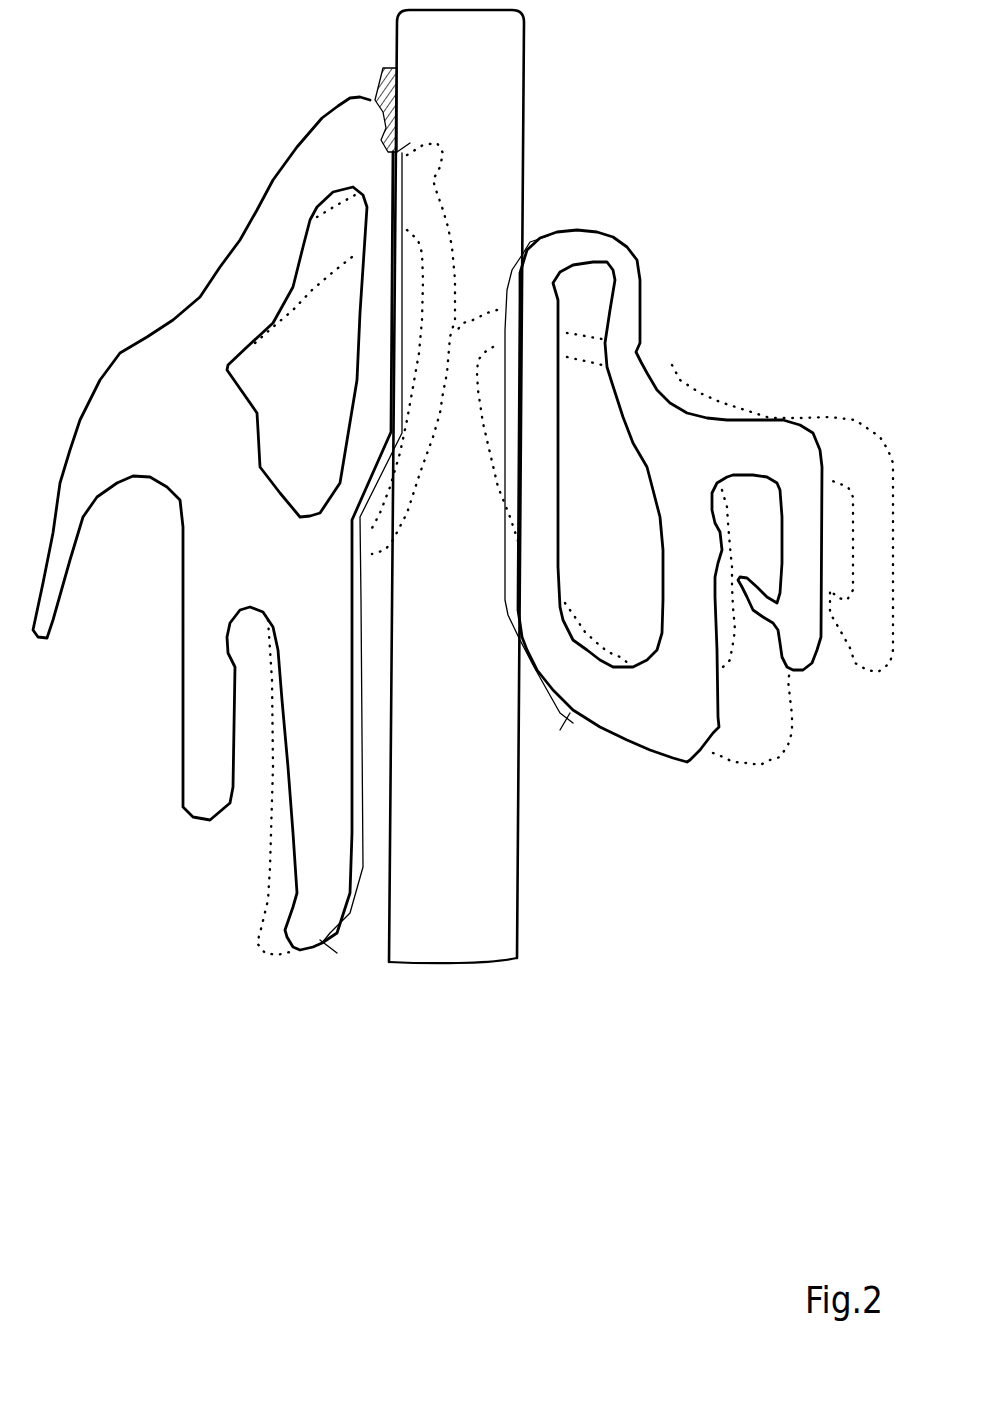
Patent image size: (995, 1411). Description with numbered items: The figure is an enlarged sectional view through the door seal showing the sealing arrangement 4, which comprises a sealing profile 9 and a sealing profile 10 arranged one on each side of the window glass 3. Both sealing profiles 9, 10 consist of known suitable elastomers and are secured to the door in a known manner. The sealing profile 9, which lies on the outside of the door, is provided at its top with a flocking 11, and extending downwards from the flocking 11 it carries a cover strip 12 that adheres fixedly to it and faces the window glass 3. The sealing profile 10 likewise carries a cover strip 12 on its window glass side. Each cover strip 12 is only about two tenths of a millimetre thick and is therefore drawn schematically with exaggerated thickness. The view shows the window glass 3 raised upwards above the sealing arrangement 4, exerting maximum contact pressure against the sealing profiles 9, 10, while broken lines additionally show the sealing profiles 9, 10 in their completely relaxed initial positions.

The window glass 3 is at (527, 58).
The sealing arrangement 4 is at (632, 218).
The sealing profile 9 is at (263, 194).
The sealing profile 10 is at (642, 328).
The flocking 11 is at (389, 78).
The cover strip 12 is at (363, 838).